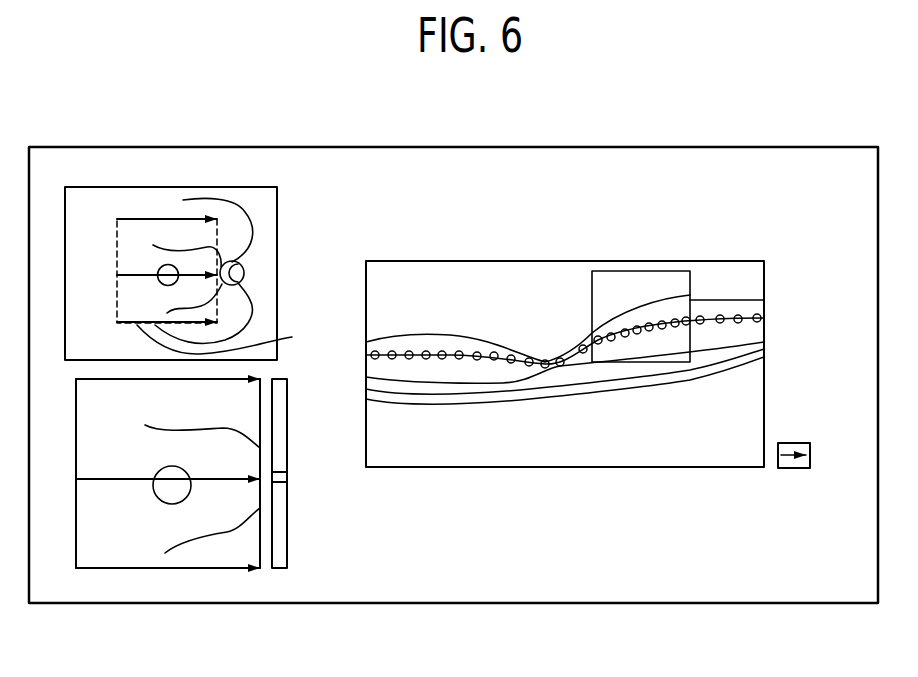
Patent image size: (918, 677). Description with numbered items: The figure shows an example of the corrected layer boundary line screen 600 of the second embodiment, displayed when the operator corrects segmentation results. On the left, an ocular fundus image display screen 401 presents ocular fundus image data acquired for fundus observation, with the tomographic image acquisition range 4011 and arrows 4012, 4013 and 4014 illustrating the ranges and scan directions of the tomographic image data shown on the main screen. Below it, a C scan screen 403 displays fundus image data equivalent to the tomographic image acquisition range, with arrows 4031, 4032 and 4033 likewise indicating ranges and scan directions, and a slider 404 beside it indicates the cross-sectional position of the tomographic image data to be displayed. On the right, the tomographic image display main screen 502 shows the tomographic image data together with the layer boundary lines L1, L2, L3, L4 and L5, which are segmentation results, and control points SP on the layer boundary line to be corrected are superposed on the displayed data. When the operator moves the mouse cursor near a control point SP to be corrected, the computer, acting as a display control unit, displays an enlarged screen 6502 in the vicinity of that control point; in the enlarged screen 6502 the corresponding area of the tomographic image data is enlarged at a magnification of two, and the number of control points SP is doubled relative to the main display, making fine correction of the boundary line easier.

The corrected layer boundary line screen 600 is at (395, 147).
The ocular fundus image display screen 401 is at (203, 186).
The tomographic image acquisition range 4011 is at (115, 262).
The arrow 4012 is at (143, 275).
The arrow 4013 is at (145, 218).
The arrow 4014 is at (236, 339).
The C scan screen 403 is at (76, 432).
The arrow 4031 is at (118, 482).
The arrow 4032 is at (110, 380).
The arrow 4033 is at (123, 570).
The slider 404 is at (289, 542).
The tomographic image display main screen 502 is at (698, 260).
The enlarged screen 6502 is at (607, 270).
The control point SP is at (652, 323).
The layer boundary line L1 is at (391, 337).
The layer boundary line L2 is at (454, 353).
The layer boundary line L3 is at (592, 368).
The layer boundary line L4 is at (657, 373).
The layer boundary line L5 is at (712, 372).